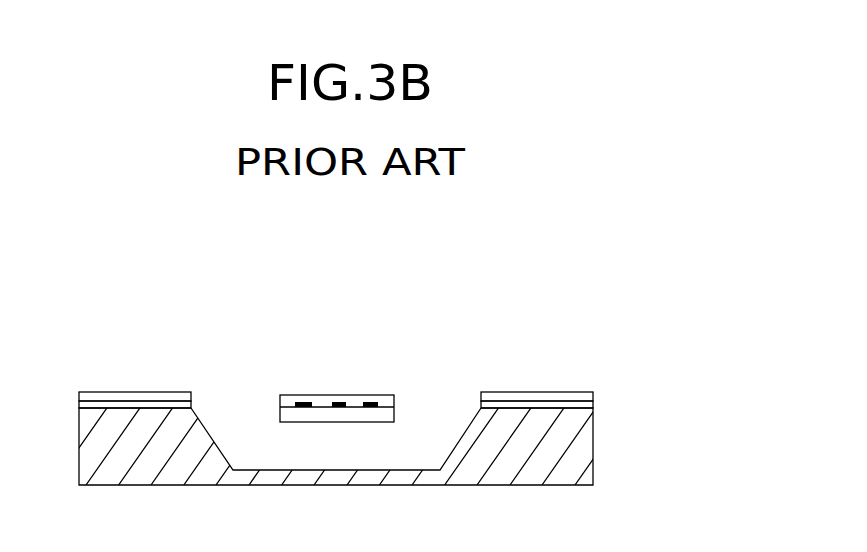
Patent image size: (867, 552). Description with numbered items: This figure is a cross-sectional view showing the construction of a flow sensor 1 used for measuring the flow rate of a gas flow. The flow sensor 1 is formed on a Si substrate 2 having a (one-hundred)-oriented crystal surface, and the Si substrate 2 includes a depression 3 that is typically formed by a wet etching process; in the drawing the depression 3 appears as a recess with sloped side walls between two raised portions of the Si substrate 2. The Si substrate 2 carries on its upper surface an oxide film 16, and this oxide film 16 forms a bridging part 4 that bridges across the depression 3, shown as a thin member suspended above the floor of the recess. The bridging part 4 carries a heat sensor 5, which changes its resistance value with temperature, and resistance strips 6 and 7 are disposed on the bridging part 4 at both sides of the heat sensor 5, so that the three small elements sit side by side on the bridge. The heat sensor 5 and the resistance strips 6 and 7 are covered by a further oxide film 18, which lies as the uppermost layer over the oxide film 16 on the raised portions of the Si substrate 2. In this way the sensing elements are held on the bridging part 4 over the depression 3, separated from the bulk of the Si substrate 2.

The flow sensor 1 is at (480, 365).
The Si substrate 2 is at (578, 462).
The depression 3 is at (228, 410).
The bridging part 4 is at (416, 401).
The heat sensor 5 is at (342, 398).
The resistance strip 6 is at (303, 398).
The resistance strip 7 is at (378, 398).
The oxide film 16 is at (578, 397).
The oxide film 18 is at (575, 393).